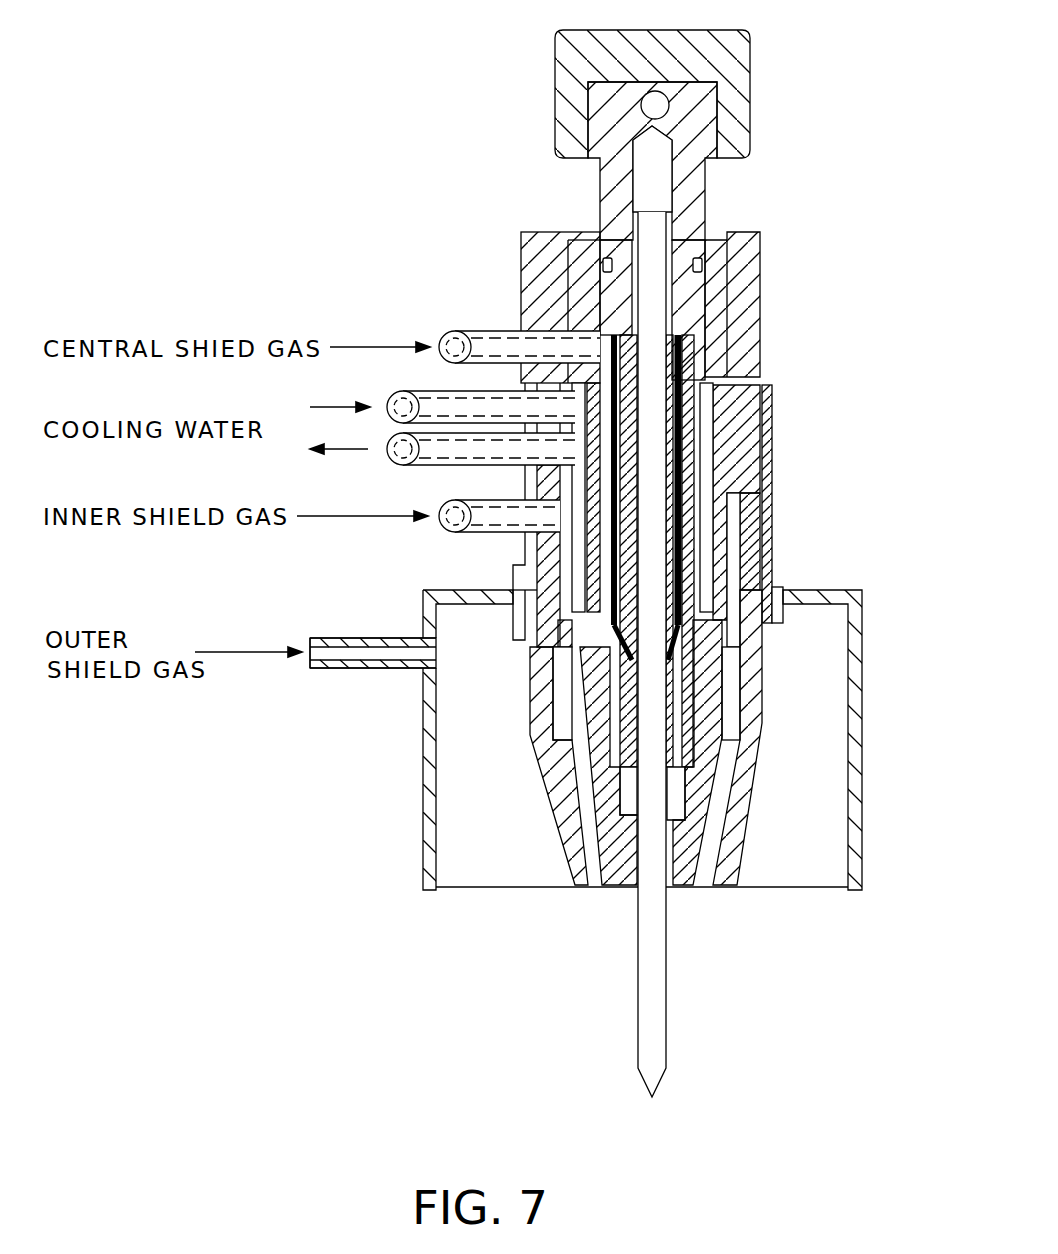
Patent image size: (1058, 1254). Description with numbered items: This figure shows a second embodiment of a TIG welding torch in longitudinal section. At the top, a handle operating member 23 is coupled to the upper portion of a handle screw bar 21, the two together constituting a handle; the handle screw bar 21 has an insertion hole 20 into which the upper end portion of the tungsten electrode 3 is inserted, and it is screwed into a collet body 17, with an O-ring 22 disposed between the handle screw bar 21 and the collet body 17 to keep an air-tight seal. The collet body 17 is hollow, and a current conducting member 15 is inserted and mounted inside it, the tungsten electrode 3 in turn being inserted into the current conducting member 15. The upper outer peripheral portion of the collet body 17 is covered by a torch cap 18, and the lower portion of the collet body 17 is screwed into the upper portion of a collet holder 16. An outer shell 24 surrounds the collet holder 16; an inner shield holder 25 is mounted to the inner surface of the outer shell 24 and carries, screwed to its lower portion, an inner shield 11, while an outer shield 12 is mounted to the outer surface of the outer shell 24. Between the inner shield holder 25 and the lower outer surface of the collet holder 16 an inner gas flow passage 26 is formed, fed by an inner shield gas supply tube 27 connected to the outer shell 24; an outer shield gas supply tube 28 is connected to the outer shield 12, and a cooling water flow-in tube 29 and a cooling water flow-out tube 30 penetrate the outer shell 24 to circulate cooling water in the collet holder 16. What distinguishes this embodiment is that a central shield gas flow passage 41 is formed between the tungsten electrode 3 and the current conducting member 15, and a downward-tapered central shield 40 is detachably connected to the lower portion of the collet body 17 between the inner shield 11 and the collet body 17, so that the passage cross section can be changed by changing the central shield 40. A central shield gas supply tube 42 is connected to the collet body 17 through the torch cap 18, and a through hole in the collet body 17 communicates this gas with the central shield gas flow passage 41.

The tungsten electrode 3 is at (667, 980).
The inner shield 11 is at (757, 737).
The outer shield 12 is at (858, 672).
The current conducting member 15 is at (700, 497).
The collet holder 16 is at (748, 440).
The collet body 17 is at (725, 296).
The torch cap 18 is at (752, 330).
The insertion hole 20 is at (642, 190).
The handle screw bar 21 is at (697, 183).
The O-ring 22 is at (735, 252).
The handle operating member 23 is at (742, 95).
The outer shell 24 is at (752, 530).
The inner shield holder 25 is at (738, 560).
The inner gas flow passage 26 is at (545, 558).
The inner shield gas supply tube 27 is at (472, 533).
The outer shield gas supply tube 28 is at (372, 668).
The cooling water flow-in tube 29 is at (440, 392).
The cooling water flow-out tube 30 is at (455, 466).
The central shield 40 is at (617, 890).
The central shield gas flow passage 41 is at (768, 392).
The central shield gas supply tube 42 is at (502, 330).